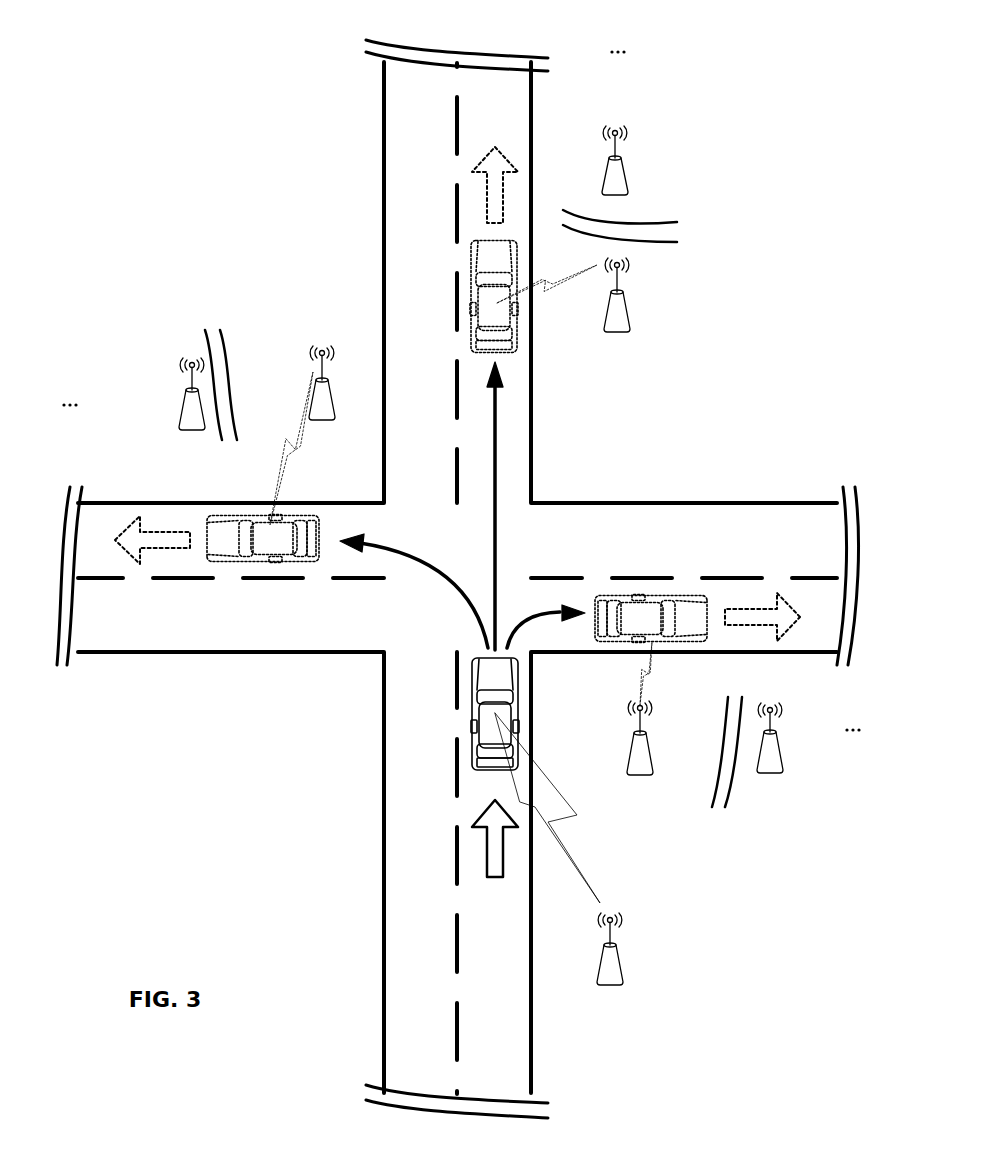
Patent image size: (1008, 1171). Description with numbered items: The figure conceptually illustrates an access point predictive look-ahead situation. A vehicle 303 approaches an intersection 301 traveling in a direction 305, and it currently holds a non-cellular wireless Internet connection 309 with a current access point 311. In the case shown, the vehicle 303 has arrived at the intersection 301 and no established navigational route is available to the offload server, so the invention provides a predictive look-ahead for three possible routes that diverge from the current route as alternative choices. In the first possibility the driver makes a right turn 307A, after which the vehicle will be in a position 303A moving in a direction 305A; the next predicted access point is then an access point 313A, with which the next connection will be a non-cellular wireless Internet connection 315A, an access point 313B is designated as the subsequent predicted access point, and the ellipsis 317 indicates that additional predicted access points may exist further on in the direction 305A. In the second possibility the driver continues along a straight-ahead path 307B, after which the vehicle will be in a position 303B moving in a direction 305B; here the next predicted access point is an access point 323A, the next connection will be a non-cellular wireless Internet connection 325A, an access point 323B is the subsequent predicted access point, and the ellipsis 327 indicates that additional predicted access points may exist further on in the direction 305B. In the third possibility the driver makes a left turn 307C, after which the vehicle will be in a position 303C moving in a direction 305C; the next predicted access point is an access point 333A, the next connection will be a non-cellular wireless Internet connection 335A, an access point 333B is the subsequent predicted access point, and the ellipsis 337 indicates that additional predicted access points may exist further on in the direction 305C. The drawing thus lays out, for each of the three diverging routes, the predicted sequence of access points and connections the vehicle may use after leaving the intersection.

The intersection 301 is at (203, 832).
The vehicle 303 is at (472, 701).
The position 303A is at (648, 595).
The position 303B is at (498, 302).
The position 303C is at (283, 560).
The direction 305 is at (495, 840).
The direction 305A is at (762, 613).
The direction 305B is at (490, 196).
The direction 305C is at (153, 538).
The right turn 307A is at (540, 620).
The straight-ahead path 307B is at (497, 525).
The left turn 307C is at (430, 565).
The non-cellular wireless Internet connection 309 is at (548, 810).
The current access point 311 is at (625, 965).
The access point 313A is at (653, 752).
The access point 313B is at (760, 765).
The non-cellular wireless Internet connection 315A is at (653, 662).
The ellipsis 317 is at (832, 732).
The access point 323A is at (627, 310).
The access point 323B is at (628, 177).
The non-cellular wireless Internet connection 325A is at (548, 285).
The ellipsis 327 is at (650, 55).
The access point 333A is at (335, 402).
The access point 333B is at (187, 410).
The non-cellular wireless Internet connection 335A is at (288, 455).
The ellipsis 337 is at (108, 408).